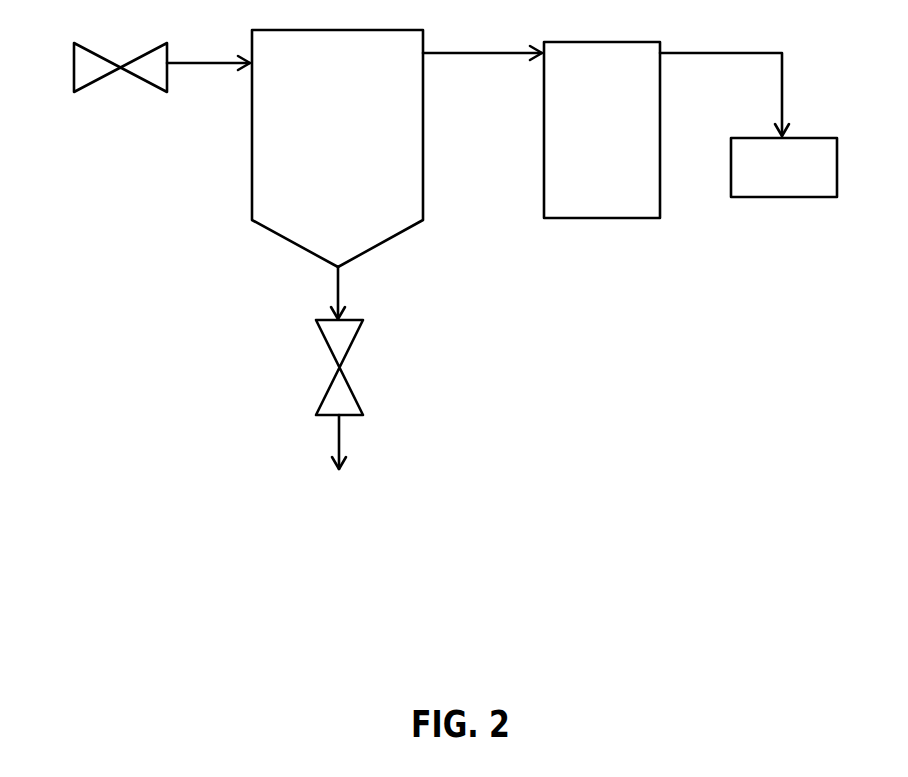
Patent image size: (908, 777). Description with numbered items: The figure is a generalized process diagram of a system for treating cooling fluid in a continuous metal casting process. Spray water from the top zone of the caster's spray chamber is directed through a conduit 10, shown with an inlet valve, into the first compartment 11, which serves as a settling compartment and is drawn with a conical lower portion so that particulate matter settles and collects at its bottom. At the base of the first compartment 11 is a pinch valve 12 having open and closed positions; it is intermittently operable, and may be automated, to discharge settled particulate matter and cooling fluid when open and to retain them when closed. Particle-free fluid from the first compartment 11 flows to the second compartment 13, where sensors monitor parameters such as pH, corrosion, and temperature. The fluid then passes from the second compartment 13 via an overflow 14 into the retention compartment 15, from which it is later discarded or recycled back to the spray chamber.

The conduit 10 is at (162, 60).
The first compartment 11 is at (337, 174).
The pinch valve 12 is at (358, 394).
The second compartment 13 is at (541, 130).
The overflow 14 is at (724, 81).
The retention compartment 15 is at (784, 167).